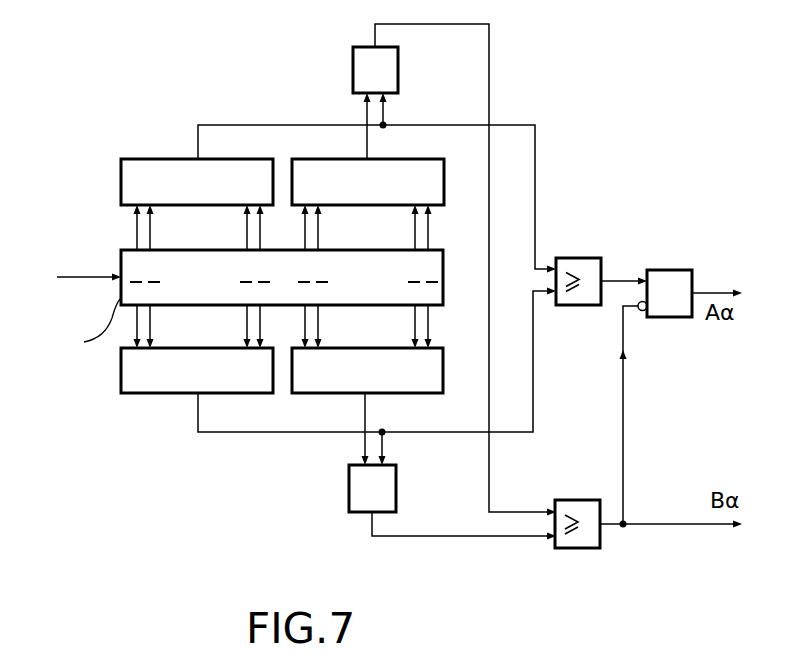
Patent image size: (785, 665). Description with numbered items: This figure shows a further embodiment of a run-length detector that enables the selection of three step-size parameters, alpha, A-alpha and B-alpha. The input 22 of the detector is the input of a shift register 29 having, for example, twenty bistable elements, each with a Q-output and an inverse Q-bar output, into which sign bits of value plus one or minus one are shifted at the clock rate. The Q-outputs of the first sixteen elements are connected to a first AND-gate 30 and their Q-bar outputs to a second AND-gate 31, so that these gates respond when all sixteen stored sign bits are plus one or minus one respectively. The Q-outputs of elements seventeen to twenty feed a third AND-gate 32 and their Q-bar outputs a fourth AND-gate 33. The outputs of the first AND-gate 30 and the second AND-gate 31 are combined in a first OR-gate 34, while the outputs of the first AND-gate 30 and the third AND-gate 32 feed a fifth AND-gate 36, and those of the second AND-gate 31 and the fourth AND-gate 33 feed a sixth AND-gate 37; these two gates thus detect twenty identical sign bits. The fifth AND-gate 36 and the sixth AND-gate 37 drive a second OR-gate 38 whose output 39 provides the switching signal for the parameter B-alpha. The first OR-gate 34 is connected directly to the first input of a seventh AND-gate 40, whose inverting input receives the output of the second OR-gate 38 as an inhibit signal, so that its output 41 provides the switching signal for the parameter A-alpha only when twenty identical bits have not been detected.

The input 22 is at (78, 277).
The shift register 29 is at (121, 252).
The first AND-gate 30 is at (142, 160).
The second AND-gate 31 is at (132, 394).
The third AND-gate 32 is at (421, 160).
The fourth AND-gate 33 is at (420, 394).
The first OR-gate 34 is at (561, 213).
The fifth AND-gate 36 is at (353, 53).
The sixth AND-gate 37 is at (349, 497).
The second OR-gate 38 is at (551, 598).
The output 39 is at (700, 527).
The seventh AND-gate 40 is at (672, 268).
The output 41 is at (716, 290).